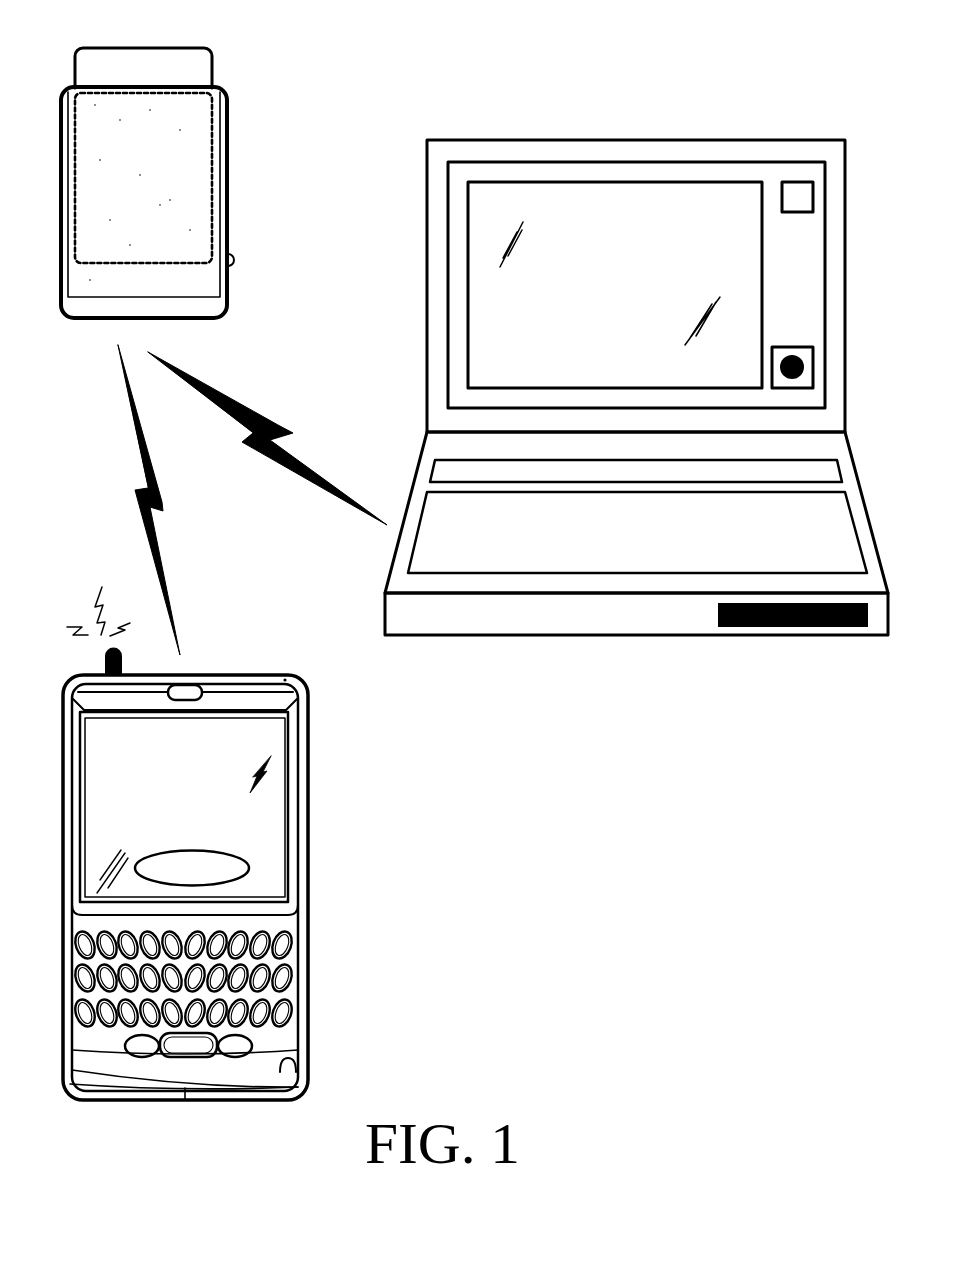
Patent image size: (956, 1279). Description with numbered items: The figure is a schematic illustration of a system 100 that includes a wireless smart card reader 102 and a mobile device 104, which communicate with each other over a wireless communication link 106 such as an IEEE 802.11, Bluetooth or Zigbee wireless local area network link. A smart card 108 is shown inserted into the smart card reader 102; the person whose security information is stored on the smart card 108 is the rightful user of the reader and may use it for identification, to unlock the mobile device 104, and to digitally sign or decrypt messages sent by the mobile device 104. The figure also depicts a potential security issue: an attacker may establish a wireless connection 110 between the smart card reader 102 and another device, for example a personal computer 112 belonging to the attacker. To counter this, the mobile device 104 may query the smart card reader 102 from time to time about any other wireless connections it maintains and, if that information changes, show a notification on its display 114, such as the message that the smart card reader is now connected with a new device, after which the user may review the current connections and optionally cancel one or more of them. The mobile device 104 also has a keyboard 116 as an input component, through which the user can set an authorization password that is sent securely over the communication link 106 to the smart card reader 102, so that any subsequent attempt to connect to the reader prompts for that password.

The system 100 is at (513, 846).
The wireless smart card reader 102 is at (228, 190).
The mobile device 104 is at (230, 843).
The wireless communication link 106 is at (150, 560).
The smart card 108 is at (135, 48).
The wireless connection 110 is at (227, 395).
The personal computer 112 is at (427, 345).
The display 114 is at (268, 800).
The keyboard 116 is at (276, 922).